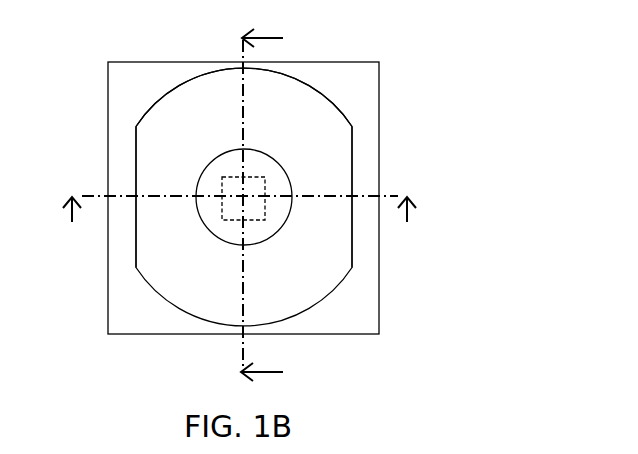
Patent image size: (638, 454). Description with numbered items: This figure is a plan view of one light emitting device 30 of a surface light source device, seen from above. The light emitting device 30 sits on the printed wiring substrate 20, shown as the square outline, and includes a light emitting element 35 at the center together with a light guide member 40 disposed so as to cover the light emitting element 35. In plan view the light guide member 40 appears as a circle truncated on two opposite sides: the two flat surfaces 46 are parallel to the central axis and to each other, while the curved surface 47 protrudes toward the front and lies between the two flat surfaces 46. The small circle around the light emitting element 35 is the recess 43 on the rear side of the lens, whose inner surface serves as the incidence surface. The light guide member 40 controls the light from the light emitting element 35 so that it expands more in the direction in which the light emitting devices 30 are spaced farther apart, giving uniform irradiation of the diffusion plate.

The light emitting device 30 is at (484, 66).
The printed wiring substrate 20 is at (160, 82).
The light guide member 40 is at (244, 180).
The curved surface 47 is at (318, 90).
The flat surfaces 46 is at (353, 135).
The recess 43 is at (268, 240).
The light emitting element 35 is at (287, 209).